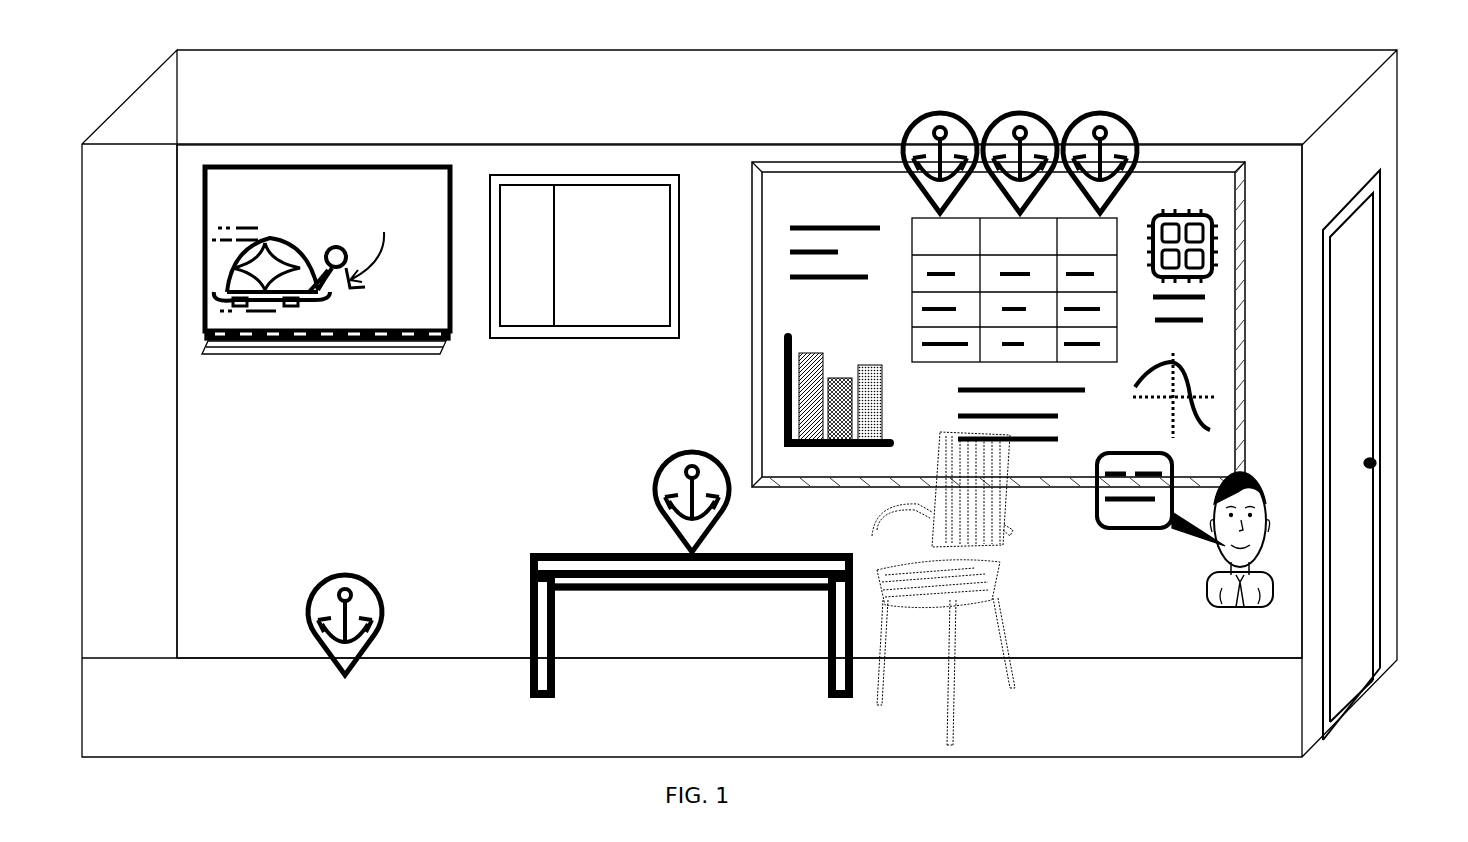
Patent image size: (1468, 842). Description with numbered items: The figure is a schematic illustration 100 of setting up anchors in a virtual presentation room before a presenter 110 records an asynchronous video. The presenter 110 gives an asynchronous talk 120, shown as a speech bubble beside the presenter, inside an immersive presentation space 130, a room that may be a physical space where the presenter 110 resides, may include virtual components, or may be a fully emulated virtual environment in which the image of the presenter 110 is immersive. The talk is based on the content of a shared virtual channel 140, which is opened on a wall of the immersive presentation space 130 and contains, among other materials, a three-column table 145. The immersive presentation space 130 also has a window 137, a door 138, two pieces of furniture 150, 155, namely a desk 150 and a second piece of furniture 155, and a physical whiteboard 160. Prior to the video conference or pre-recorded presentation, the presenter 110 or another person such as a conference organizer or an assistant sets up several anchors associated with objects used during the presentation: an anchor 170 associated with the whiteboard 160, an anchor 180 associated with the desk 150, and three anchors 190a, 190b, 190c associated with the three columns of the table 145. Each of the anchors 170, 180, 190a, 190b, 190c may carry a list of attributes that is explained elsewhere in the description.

The schematic illustration 100 is at (1437, 81).
The presenter 110 is at (1200, 592).
The asynchronous talk 120 is at (1097, 528).
The immersive presentation space 130 is at (430, 444).
The window 137 is at (613, 247).
The door 138 is at (1365, 399).
The shared virtual channel 140 is at (856, 326).
The three-column table 145 is at (908, 226).
The desk 150 is at (602, 550).
The piece of furniture 155 is at (1005, 510).
The physical whiteboard 160 is at (425, 265).
The anchor 170 is at (330, 578).
The anchor 180 is at (657, 478).
The anchor 190a is at (902, 128).
The anchor 190b is at (983, 128).
The anchor 190c is at (1063, 128).